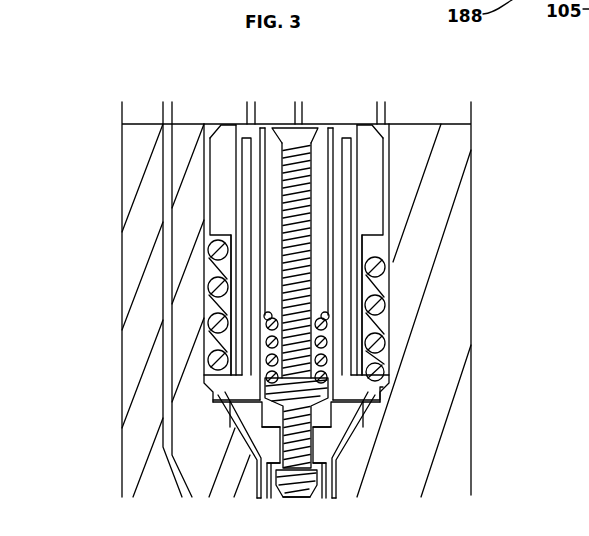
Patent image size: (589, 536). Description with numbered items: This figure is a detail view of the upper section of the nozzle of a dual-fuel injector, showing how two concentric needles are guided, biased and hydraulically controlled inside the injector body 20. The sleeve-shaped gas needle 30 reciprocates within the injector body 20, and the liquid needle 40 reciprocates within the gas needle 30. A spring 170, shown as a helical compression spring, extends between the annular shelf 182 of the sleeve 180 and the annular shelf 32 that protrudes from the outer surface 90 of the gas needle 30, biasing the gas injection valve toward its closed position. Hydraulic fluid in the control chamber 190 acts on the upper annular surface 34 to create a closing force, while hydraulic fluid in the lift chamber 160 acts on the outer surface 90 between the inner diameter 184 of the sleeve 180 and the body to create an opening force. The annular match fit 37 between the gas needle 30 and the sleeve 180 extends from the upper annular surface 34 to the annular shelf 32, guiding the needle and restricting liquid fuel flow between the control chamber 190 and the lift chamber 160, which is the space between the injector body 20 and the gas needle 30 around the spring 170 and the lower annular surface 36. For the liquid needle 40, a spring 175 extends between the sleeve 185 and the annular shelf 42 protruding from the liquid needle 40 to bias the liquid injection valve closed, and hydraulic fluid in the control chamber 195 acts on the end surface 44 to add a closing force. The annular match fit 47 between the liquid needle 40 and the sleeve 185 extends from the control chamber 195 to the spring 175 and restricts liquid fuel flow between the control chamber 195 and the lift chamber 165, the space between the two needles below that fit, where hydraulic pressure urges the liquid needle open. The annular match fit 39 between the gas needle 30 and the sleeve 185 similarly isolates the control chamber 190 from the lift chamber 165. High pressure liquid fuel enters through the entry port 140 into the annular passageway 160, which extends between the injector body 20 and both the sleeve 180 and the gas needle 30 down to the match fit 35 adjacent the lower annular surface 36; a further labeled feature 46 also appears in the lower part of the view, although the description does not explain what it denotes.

The injector body 20 is at (425, 378).
The inner diameter of sleeve 184 is at (236, 157).
The upper annular surface 34 is at (247, 133).
The control chamber 190 is at (250, 135).
The control chamber 195 is at (290, 134).
The end surface of liquid needle 44 is at (300, 147).
The entry port 140 is at (397, 138).
The lift chamber 160 is at (388, 160).
The sleeve 180 is at (365, 202).
The sleeve 185 is at (352, 228).
The annular match fit 37 is at (237, 138).
The annular match fit 39 is at (262, 207).
The annular match fit 47 is at (270, 232).
The annular shelf of sleeve 182 is at (210, 230).
The spring 170 is at (212, 270).
The spring 175 is at (216, 308).
The annular shelf 32 is at (215, 376).
The guide 46 is at (270, 420).
The lower annular surface 36 is at (225, 450).
The gas needle 30 is at (335, 292).
The outer surface of gas needle 90 is at (385, 318).
The annular shelf 42 is at (335, 420).
The lift chamber 165 is at (322, 467).
The liquid needle 40 is at (365, 467).
The match fit 35 is at (340, 498).